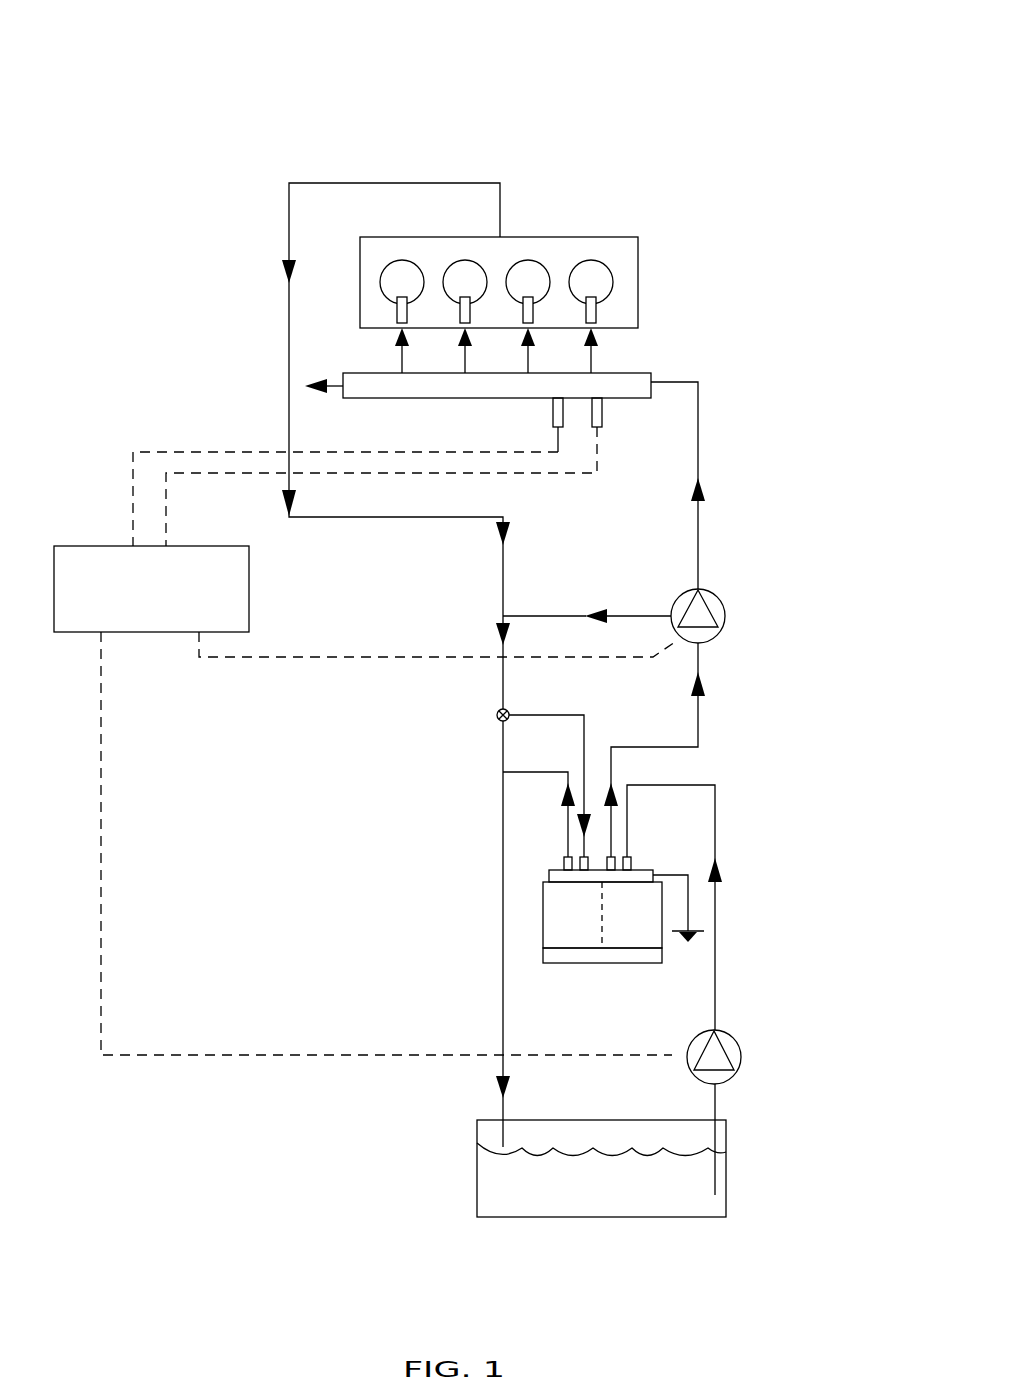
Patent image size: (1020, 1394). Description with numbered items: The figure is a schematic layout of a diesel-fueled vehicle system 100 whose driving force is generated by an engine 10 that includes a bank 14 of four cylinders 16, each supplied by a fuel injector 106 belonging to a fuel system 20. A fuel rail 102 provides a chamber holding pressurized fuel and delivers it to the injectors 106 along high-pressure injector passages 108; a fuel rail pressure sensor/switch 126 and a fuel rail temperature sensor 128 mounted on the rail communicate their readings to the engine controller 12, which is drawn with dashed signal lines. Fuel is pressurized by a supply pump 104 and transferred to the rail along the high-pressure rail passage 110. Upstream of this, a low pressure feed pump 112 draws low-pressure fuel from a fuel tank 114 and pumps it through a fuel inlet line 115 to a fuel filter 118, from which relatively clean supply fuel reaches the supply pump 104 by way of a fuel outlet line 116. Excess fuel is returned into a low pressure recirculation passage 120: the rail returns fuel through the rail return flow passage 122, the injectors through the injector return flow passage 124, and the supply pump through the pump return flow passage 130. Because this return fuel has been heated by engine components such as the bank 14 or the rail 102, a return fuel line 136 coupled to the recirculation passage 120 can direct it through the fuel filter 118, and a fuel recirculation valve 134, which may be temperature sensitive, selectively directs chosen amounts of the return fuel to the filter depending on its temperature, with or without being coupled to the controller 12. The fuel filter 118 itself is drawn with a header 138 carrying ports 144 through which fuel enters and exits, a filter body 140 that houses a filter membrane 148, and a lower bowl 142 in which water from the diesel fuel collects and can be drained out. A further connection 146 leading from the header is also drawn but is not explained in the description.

The vehicle system 100 is at (774, 50).
The engine 10 is at (726, 273).
The engine controller 12 is at (364, 741).
The bank 14 is at (638, 237).
The cylinders 16 is at (613, 280).
The fuel system 20 is at (824, 440).
The fuel rail 102 is at (631, 373).
The supply pump 104 is at (722, 602).
The fuel injectors 106 is at (397, 310).
The high-pressure injector passages 108 is at (400, 357).
The high-pressure rail passage 110 is at (699, 418).
The low pressure feed pump 112 is at (740, 1045).
The fuel tank 114 is at (727, 1135).
The fuel inlet line 115 is at (716, 800).
The fuel outlet line 116 is at (699, 725).
The fuel filter 118 is at (408, 938).
The low pressure recirculation passage 120 is at (395, 518).
The rail return flow passage 122 is at (305, 386).
The injector return flow passage 124 is at (333, 183).
The fuel rail pressure sensor/switch 126 is at (557, 412).
The fuel rail temperature sensor 128 is at (603, 412).
The pump return flow passage 130 is at (528, 616).
The fuel recirculation valve 134 is at (497, 719).
The return fuel line 136 is at (540, 715).
The header 138 is at (549, 877).
The filter body 140 is at (543, 922).
The lower bowl 142 is at (545, 956).
The ports 144 is at (568, 856).
The ground connection 146 is at (688, 915).
The filter membrane 148 is at (602, 935).